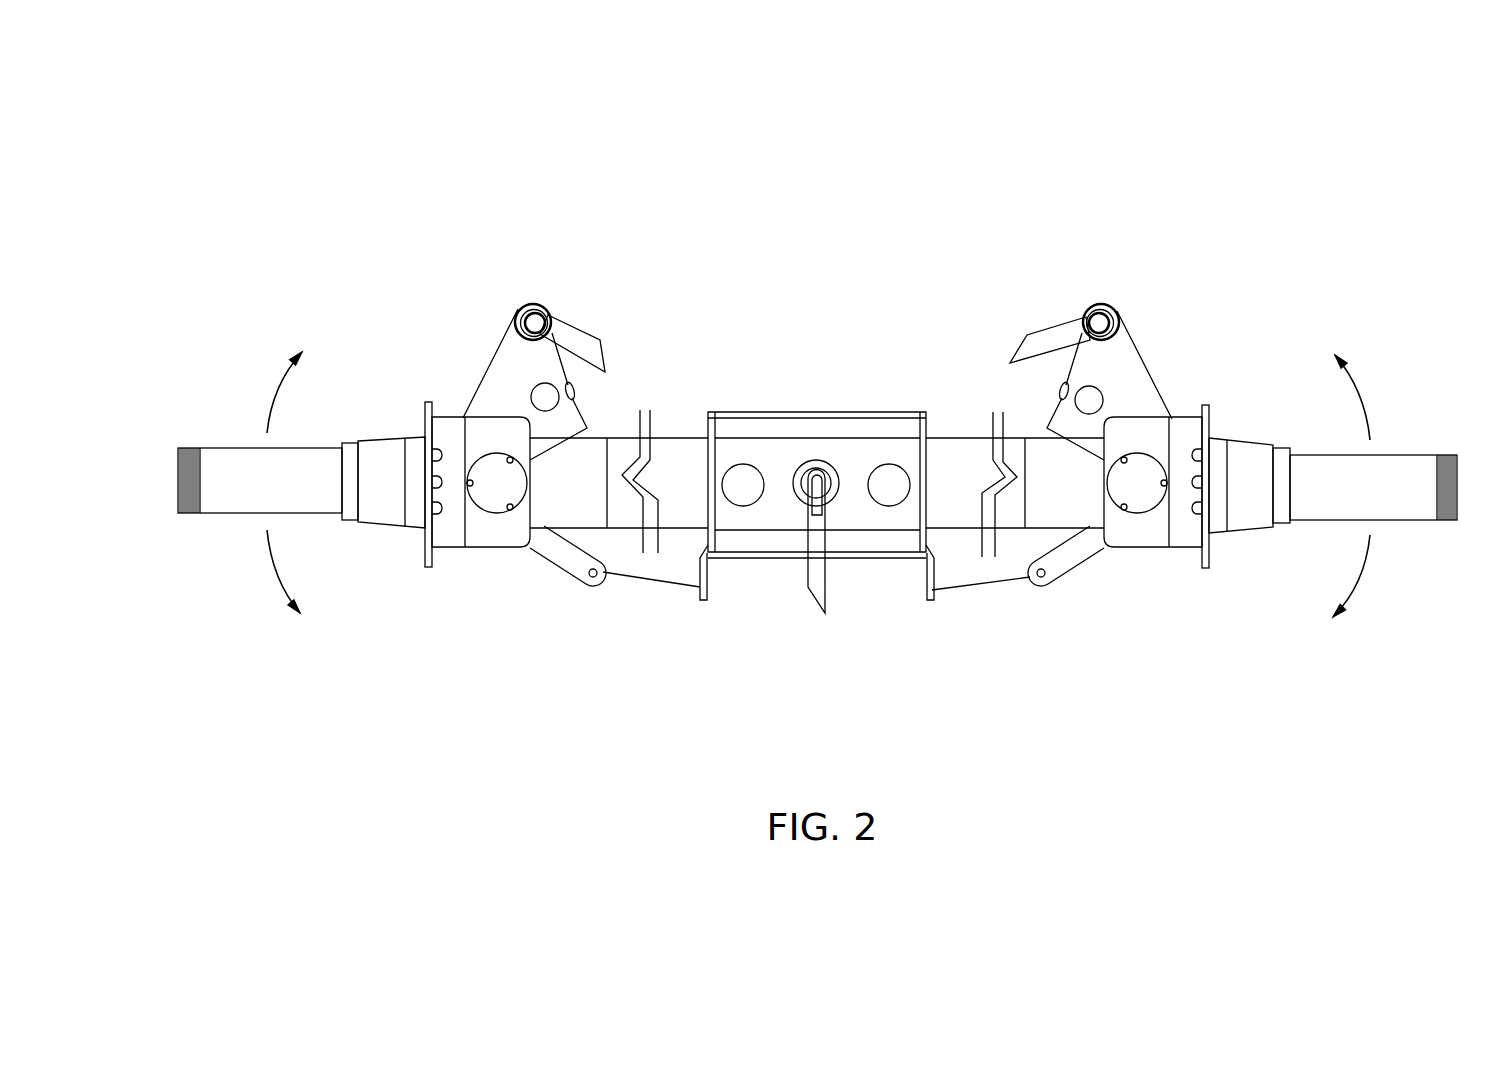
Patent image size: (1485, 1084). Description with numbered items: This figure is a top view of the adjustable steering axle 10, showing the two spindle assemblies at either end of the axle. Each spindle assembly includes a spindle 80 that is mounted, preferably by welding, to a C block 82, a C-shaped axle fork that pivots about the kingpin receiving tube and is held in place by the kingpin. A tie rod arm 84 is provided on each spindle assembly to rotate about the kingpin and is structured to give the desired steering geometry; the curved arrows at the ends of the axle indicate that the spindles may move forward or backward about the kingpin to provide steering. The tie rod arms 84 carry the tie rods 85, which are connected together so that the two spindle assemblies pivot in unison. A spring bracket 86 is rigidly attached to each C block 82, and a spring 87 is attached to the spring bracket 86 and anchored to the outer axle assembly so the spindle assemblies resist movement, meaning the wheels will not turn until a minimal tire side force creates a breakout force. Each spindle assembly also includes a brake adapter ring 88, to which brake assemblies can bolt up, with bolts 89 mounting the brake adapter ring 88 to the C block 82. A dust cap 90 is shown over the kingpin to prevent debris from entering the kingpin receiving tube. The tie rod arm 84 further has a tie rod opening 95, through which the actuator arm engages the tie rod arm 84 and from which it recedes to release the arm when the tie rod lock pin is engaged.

The adjustable steering axle 10 is at (943, 283).
The spindle 80 is at (387, 498).
The C block 82 is at (493, 548).
The tie rod arm 84 is at (500, 365).
The tie rod 85 is at (580, 343).
The spring bracket 86 is at (565, 570).
The spring 87 is at (648, 580).
The brake adapter ring 88 is at (430, 565).
The bolts 89 is at (432, 482).
The dust cap 90 is at (500, 500).
The tie rod opening 95 is at (558, 400).